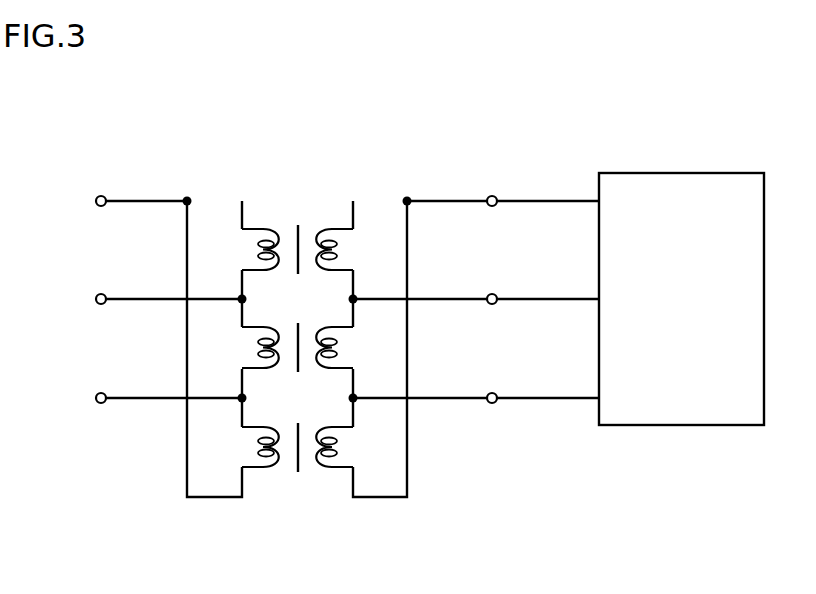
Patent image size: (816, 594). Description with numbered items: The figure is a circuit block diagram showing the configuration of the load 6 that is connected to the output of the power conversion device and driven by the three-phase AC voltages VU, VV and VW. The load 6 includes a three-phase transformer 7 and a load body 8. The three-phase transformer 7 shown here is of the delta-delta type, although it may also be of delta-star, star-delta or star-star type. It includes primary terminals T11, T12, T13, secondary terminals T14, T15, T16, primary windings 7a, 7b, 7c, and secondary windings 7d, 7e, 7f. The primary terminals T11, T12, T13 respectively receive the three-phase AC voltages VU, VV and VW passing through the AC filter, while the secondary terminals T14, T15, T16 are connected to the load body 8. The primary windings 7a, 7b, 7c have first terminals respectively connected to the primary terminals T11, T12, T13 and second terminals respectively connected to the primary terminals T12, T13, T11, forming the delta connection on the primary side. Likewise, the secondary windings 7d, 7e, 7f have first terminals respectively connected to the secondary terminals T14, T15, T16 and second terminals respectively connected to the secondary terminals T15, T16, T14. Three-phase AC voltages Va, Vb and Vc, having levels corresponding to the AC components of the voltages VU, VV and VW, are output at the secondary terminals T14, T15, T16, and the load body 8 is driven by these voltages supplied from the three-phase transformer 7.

The load 6 is at (103, 135).
The three-phase transformer 7 is at (506, 520).
The primary winding 7a is at (258, 245).
The primary winding 7b is at (258, 344).
The primary winding 7c is at (258, 443).
The secondary winding 7d is at (337, 245).
The secondary winding 7e is at (337, 344).
The secondary winding 7f is at (337, 443).
The load body 8 is at (683, 426).
The primary terminal T11 is at (105, 196).
The primary terminal T12 is at (105, 294).
The primary terminal T13 is at (105, 393).
The secondary terminal T14 is at (491, 196).
The secondary terminal T15 is at (491, 294).
The secondary terminal T16 is at (491, 393).